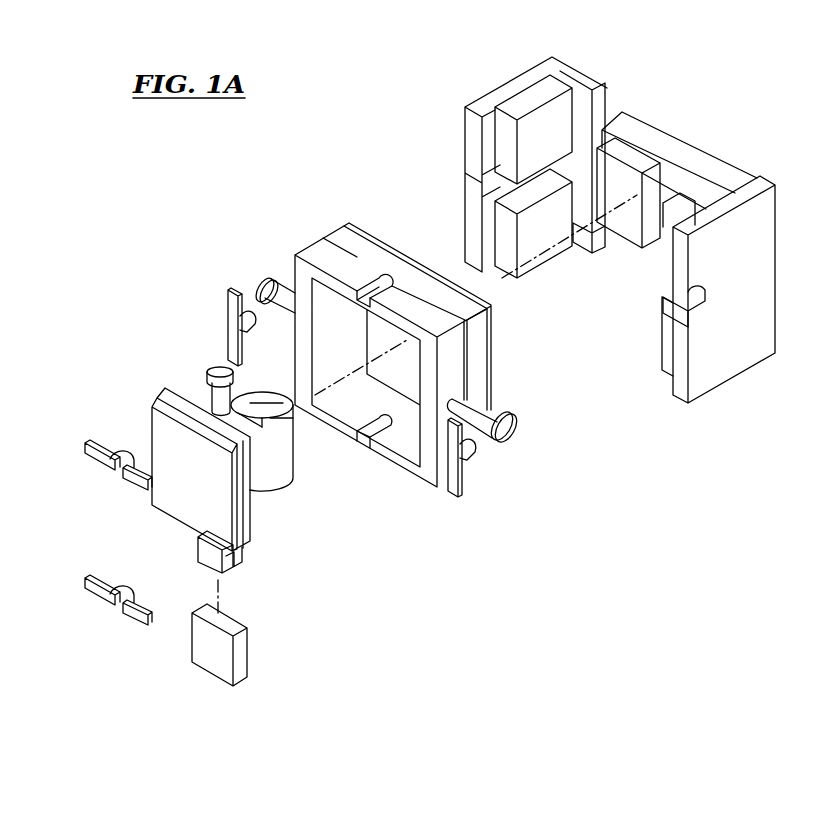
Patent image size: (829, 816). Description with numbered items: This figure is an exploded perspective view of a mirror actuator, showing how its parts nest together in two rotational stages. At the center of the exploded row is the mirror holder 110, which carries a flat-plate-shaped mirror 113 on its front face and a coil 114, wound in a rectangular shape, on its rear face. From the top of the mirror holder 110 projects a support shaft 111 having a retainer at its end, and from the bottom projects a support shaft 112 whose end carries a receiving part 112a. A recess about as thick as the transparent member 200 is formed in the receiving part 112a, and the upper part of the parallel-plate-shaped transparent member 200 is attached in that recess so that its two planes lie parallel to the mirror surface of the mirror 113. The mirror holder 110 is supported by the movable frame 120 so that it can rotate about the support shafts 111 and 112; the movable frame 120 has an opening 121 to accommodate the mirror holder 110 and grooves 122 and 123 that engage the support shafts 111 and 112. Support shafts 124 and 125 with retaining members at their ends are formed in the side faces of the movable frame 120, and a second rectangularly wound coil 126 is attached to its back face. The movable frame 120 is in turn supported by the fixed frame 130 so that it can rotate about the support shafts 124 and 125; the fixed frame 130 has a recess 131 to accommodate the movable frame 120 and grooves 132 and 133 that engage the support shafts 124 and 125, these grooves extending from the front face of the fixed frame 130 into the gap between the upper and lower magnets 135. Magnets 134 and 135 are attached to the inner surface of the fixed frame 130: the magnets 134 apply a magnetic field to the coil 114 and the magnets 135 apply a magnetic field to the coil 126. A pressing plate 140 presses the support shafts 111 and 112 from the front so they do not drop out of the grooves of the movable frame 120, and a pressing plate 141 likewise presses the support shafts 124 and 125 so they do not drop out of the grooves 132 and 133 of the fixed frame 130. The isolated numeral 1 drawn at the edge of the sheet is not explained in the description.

The inductance element 1 is at (822, 478).
The mirror holder 110 is at (282, 520).
The support shaft 111 is at (214, 375).
The support shaft 112 is at (198, 530).
The receiving part 112a is at (235, 565).
The mirror 113 is at (180, 487).
The coil 114 is at (255, 397).
The movable frame 120 is at (398, 478).
The opening 121 is at (332, 305).
The groove 122 is at (388, 272).
The groove 123 is at (370, 445).
The support shaft 124 is at (280, 285).
The support shaft 125 is at (510, 442).
The coil 126 is at (480, 372).
The fixed frame 130 is at (603, 226).
The recess 131 is at (637, 287).
The groove 132 is at (468, 185).
The groove 133 is at (703, 300).
The magnet 134 is at (670, 175).
The magnet 135 is at (531, 193).
The pressing plate 140 is at (102, 470).
The pressing plate 141 is at (235, 290).
The transparent member 200 is at (208, 675).